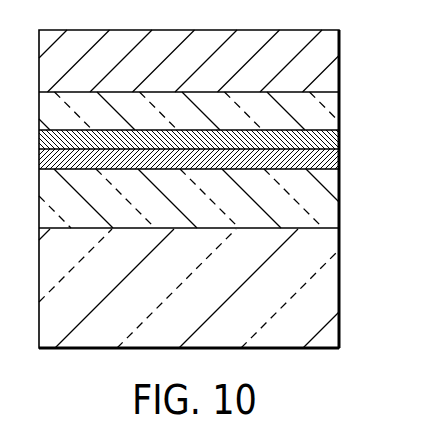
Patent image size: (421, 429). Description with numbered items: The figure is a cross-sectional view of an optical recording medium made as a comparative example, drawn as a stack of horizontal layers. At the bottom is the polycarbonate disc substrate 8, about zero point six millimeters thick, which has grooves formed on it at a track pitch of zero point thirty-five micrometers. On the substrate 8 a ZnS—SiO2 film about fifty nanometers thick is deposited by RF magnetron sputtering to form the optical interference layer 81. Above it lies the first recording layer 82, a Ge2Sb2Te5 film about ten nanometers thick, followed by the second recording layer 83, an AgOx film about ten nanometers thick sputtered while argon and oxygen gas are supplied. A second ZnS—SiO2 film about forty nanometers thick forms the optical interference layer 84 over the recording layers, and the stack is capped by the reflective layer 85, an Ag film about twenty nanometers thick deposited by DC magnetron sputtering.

The disc substrate 8 is at (341, 284).
The optical interference layer 81 is at (341, 196).
The first recording layer 82 is at (341, 161).
The second recording layer 83 is at (341, 134).
The optical interference layer 84 is at (341, 108).
The reflective layer 85 is at (341, 59).